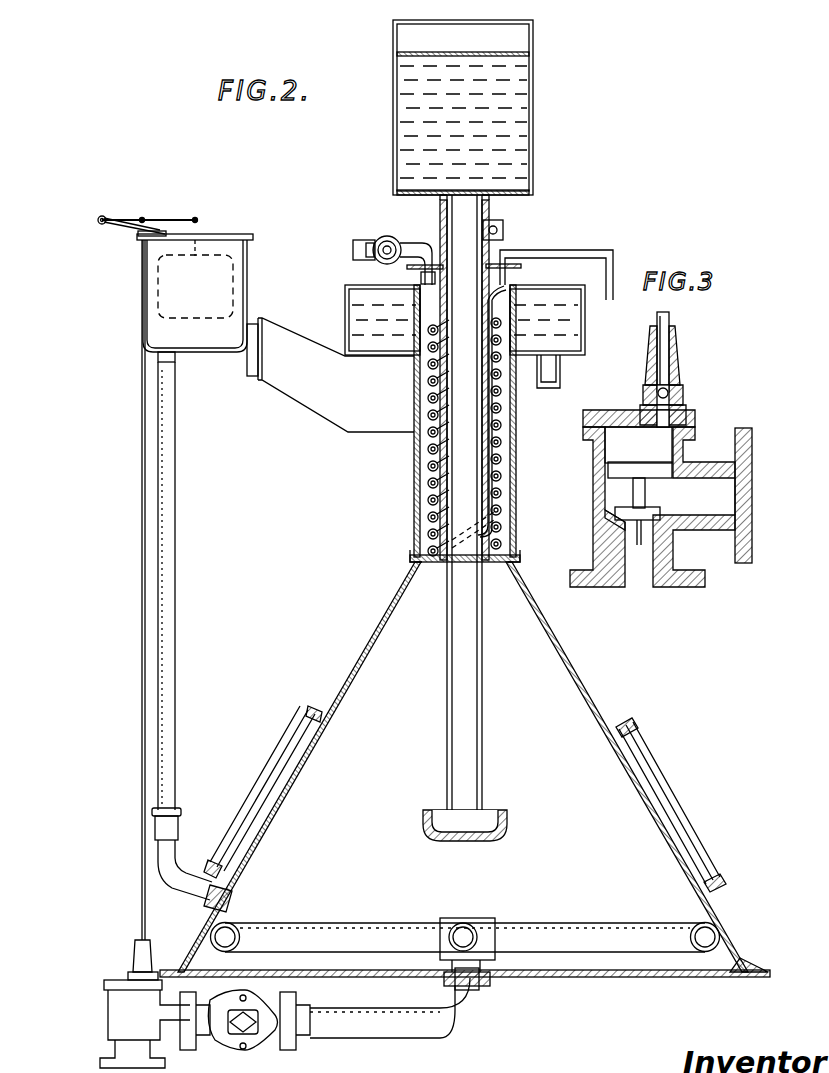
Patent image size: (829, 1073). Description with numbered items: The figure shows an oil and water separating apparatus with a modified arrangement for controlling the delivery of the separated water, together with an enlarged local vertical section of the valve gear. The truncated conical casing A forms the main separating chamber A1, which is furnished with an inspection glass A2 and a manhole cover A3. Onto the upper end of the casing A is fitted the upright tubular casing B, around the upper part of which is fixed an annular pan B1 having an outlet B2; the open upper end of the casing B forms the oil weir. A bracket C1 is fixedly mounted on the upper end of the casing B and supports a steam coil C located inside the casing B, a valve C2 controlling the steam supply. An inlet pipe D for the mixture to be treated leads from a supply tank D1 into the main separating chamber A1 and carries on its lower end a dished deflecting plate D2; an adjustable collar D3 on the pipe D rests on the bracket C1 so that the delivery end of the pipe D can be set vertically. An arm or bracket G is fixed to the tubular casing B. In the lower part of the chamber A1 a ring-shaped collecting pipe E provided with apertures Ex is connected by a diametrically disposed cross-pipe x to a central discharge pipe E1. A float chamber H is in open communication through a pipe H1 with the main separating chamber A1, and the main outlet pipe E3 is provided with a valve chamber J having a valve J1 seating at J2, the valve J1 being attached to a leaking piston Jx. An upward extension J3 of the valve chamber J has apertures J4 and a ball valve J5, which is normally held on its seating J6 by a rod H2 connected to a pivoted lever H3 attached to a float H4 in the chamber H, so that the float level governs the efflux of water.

In FIG. 2, the supply tank D1 is at (533, 120).
In FIG. 2, the inlet pipe D is at (482, 697).
In FIG. 2, the adjustable collar D3 is at (440, 232).
In FIG. 2, the bracket C1 is at (489, 248).
In FIG. 2, the valve C2 is at (387, 250).
In FIG. 2, the steam coil C is at (428, 467).
In FIG. 2, the tubular casing B is at (516, 478).
In FIG. 2, the annular pan B1 is at (585, 322).
In FIG. 2, the outlet B2 is at (553, 370).
In FIG. 2, the arm or bracket G is at (312, 398).
In FIG. 2, the float chamber H is at (247, 284).
In FIG. 2, the float H4 is at (233, 258).
In FIG. 2, the pivoted lever H3 is at (163, 218).
In FIG. 2, the pipe H1 is at (175, 560).
In FIG. 2, the rod H2 is at (142, 570).
In FIG. 3, the rod H2 is at (669, 320).
In FIG. 2, the valve chamber J is at (135, 985).
In FIG. 3, the valve chamber J is at (618, 452).
In FIG. 2, the main outlet pipe E3 is at (365, 1040).
In FIG. 2, the central discharge pipe E1 is at (490, 985).
In FIG. 2, the collecting pipe E is at (330, 923).
In FIG. 2, the cross-pipe x is at (470, 925).
In FIG. 2, the main separating chamber A1 is at (368, 668).
In FIG. 2, the truncated conical casing A is at (580, 682).
In FIG. 2, the inspection glass A2 is at (282, 780).
In FIG. 2, the manhole cover A3 is at (660, 800).
In FIG. 2, the apertures Ex is at (215, 905).
In FIG. 2, the deflecting plate D2 is at (507, 815).
In FIG. 3, the upward extension J3 is at (677, 350).
In FIG. 3, the apertures J4 is at (648, 388).
In FIG. 3, the ball valve J5 is at (670, 392).
In FIG. 3, the seating J6 is at (680, 403).
In FIG. 3, the leaking piston Jx is at (660, 470).
In FIG. 3, the valve J1 is at (650, 512).
In FIG. 3, the seating J2 is at (603, 522).